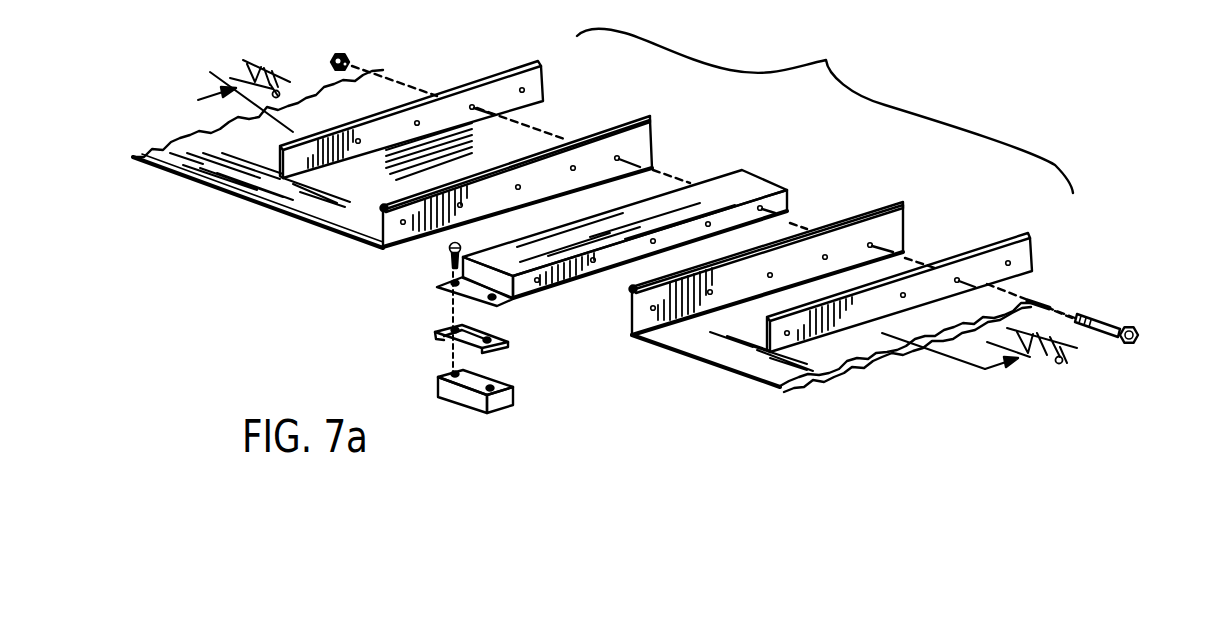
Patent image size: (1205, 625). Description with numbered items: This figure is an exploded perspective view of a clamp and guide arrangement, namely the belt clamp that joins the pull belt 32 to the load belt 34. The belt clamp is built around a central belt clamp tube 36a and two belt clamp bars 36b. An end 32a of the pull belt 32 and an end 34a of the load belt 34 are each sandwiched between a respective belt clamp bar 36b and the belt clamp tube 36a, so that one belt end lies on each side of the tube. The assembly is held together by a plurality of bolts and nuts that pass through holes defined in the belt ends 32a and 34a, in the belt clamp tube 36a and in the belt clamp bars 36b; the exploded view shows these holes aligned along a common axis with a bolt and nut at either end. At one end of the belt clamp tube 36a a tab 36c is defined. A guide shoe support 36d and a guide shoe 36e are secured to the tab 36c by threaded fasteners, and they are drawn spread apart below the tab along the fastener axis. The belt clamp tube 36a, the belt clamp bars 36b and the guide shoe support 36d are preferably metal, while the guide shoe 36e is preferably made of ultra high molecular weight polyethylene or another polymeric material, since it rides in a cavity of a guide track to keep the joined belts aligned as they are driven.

The pull belt 32 is at (305, 226).
The end of the pull belt 32a is at (652, 138).
The load belt 34 is at (774, 388).
The end of the load belt 34a is at (952, 200).
The belt clamp tube 36a is at (788, 134).
The belt clamp bars 36b is at (545, 77).
The tab 36c is at (508, 302).
The guide shoe support 36d is at (500, 343).
The guide shoe 36e is at (513, 404).